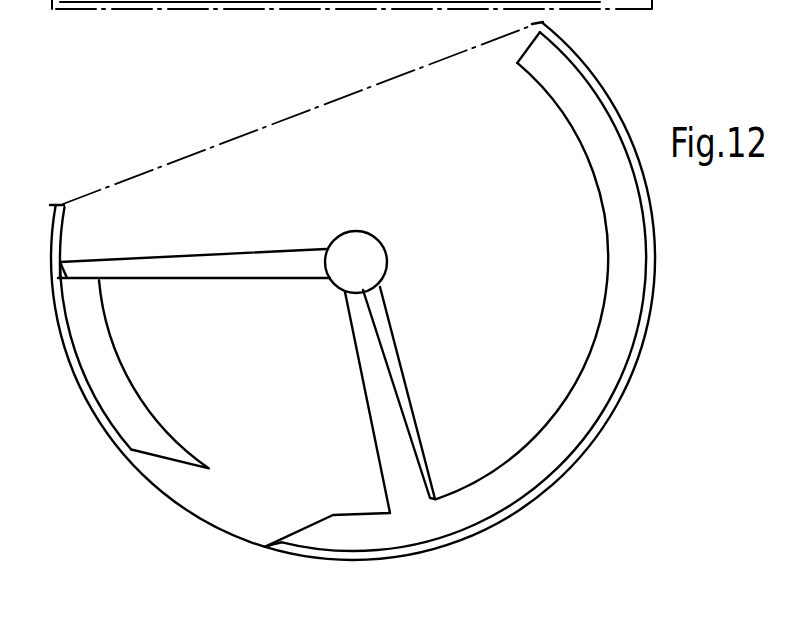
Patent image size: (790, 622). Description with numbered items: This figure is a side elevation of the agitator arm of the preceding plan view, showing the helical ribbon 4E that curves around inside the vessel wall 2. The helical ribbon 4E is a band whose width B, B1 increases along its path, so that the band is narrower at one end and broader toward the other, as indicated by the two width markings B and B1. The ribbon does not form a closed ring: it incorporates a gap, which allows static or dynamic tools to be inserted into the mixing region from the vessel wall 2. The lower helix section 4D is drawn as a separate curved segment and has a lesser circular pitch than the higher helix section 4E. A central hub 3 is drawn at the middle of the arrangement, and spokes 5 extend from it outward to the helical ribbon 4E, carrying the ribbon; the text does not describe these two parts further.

The vessel wall 2 is at (657, 258).
The hub 3 is at (353, 258).
The lower helix section 4D is at (130, 418).
The helical ribbon 4E is at (613, 348).
The spoke 5 is at (233, 263).
The width B is at (517, 540).
The width B1 is at (590, 22).